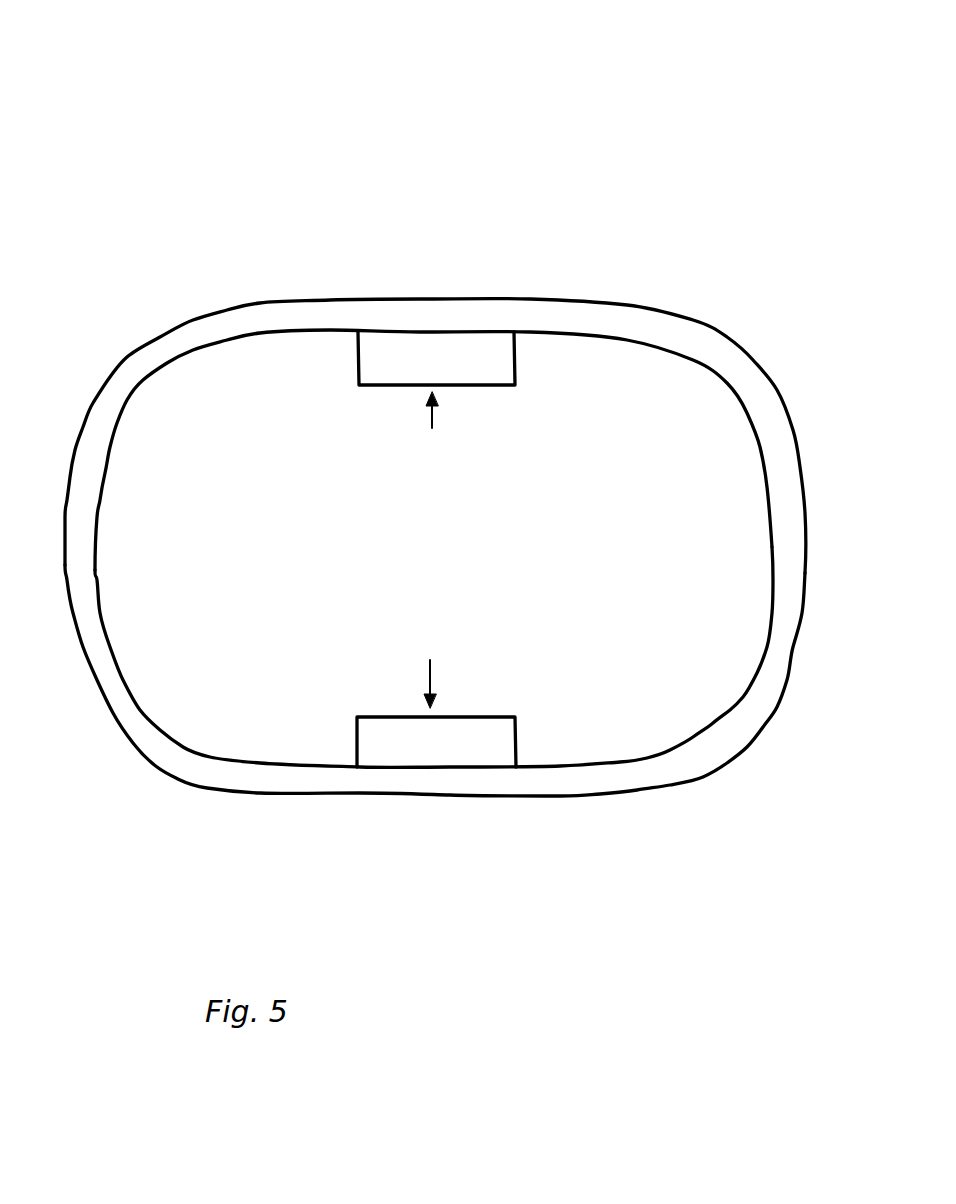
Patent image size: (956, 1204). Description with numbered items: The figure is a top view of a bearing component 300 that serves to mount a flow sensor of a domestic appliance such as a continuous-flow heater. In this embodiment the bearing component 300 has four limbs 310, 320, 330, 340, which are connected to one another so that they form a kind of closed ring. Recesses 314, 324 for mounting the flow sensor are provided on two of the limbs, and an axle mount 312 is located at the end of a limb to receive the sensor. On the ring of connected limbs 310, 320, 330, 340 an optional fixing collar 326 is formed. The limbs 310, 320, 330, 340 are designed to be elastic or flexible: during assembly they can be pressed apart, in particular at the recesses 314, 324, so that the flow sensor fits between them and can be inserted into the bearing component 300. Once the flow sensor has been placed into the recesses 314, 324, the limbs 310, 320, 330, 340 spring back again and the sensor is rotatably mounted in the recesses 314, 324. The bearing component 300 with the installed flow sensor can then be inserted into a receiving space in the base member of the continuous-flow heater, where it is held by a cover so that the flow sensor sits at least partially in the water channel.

The bearing component 300 is at (594, 158).
The limb 310 is at (236, 318).
The axle mount 312 is at (423, 352).
The recess 314 is at (430, 429).
The limb 320 is at (233, 770).
The recess 324 is at (433, 666).
The fixing collar 326 is at (448, 782).
The limb 330 is at (633, 328).
The limb 340 is at (672, 765).